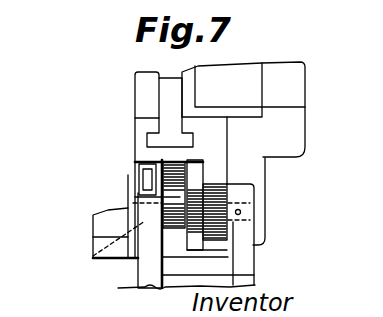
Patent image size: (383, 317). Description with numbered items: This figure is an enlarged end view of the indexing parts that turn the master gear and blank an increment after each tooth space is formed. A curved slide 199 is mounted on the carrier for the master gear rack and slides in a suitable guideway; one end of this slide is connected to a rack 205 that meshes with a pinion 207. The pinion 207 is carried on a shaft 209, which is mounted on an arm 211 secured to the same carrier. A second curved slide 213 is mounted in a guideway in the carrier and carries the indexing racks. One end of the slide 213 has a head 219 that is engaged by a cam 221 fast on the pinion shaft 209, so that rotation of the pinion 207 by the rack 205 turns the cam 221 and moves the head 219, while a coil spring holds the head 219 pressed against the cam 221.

The curved slide 199 is at (145, 85).
The rack 205 is at (217, 187).
The pinion 207 is at (228, 202).
The shaft 209 is at (93, 248).
The arm 211 is at (160, 288).
The curved slide 213 is at (160, 267).
The head 219 is at (173, 243).
The cam 221 is at (137, 172).